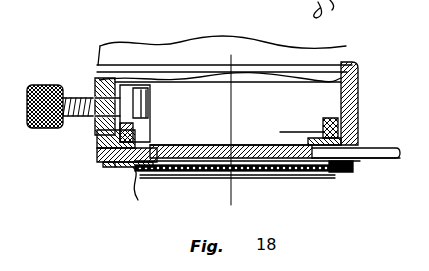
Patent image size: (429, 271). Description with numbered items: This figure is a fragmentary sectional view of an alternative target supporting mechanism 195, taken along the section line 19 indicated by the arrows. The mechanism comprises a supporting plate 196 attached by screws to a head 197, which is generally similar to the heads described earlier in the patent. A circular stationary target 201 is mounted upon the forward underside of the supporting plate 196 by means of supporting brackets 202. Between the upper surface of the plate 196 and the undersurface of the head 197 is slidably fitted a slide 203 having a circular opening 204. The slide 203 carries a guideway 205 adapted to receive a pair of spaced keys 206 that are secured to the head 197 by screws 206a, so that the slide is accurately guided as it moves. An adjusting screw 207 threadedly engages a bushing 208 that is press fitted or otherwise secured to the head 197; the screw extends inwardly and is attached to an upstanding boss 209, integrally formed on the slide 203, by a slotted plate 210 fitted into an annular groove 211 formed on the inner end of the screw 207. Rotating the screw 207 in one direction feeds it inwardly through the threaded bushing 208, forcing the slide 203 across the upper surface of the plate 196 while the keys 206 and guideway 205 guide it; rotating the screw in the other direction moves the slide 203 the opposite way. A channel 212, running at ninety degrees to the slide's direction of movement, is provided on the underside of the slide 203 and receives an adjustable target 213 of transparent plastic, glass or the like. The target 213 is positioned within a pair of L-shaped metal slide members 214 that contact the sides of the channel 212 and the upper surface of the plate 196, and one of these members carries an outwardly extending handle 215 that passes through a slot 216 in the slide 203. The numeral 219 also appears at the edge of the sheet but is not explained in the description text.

The section line 19- 19 is at (211, 56).
The target supporting mechanism 195 is at (343, 173).
The supporting plate 196 is at (105, 168).
The head 197 is at (224, 42).
The stationary target 201 is at (196, 172).
The supporting brackets 202 is at (331, 194).
The slide 203 is at (307, 148).
The circular opening 204 is at (208, 137).
The guideway 205 is at (348, 120).
The keys 206 is at (357, 143).
The screws 206a is at (133, 135).
The adjusting screw 207 is at (81, 96).
The bushing 208 is at (96, 78).
The upstanding boss 209 is at (133, 130).
The slotted plate 210 is at (144, 68).
The annular groove 211 is at (150, 105).
The channel 212 is at (118, 167).
The adjustable target 213 is at (258, 140).
The L-shaped slide members 214 is at (163, 178).
The handle 215 is at (383, 150).
The slot 216 is at (368, 150).
The lead to FIG. 19 219 is at (318, 270).